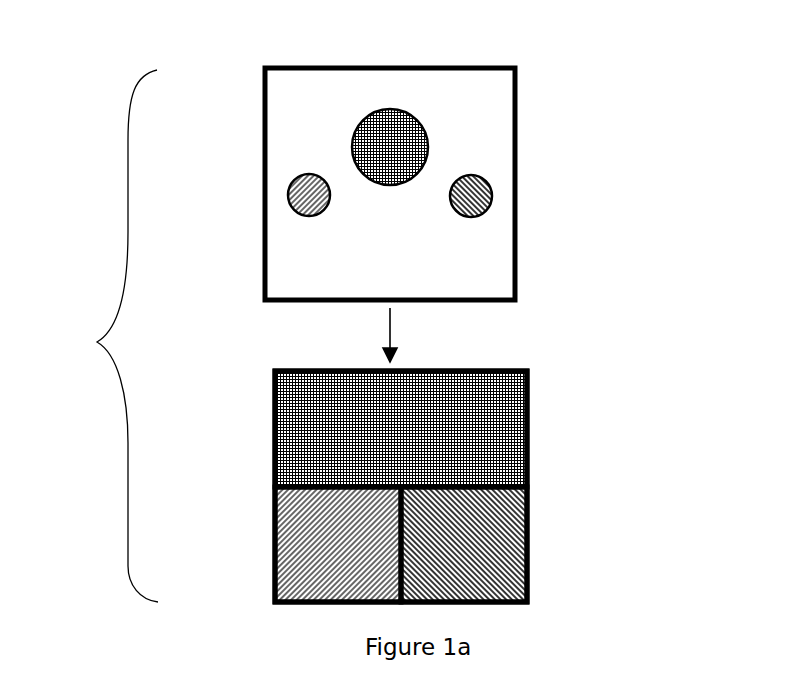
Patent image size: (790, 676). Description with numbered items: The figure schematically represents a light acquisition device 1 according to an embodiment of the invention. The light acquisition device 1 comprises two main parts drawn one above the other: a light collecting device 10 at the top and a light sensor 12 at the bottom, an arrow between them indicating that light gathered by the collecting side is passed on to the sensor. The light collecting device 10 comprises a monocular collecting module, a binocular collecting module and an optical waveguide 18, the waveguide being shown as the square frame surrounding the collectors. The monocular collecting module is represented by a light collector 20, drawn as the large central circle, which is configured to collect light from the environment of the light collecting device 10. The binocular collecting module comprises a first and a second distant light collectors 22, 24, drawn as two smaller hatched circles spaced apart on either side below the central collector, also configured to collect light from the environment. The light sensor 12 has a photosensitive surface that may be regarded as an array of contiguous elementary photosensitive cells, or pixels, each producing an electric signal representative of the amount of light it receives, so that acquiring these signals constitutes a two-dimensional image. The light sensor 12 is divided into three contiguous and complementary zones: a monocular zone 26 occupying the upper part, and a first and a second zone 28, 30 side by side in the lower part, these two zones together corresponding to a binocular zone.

The light acquisition device 1 is at (111, 336).
The light collecting device 10 is at (374, 170).
The light sensor 12 is at (413, 470).
The optical waveguide 18 is at (265, 138).
The light collector 20 is at (401, 94).
The first distant light collector 22 is at (301, 238).
The second distant light collector 24 is at (497, 238).
The monocular zone 26 is at (487, 425).
The first zone 28 is at (338, 547).
The second zone 30 is at (463, 551).